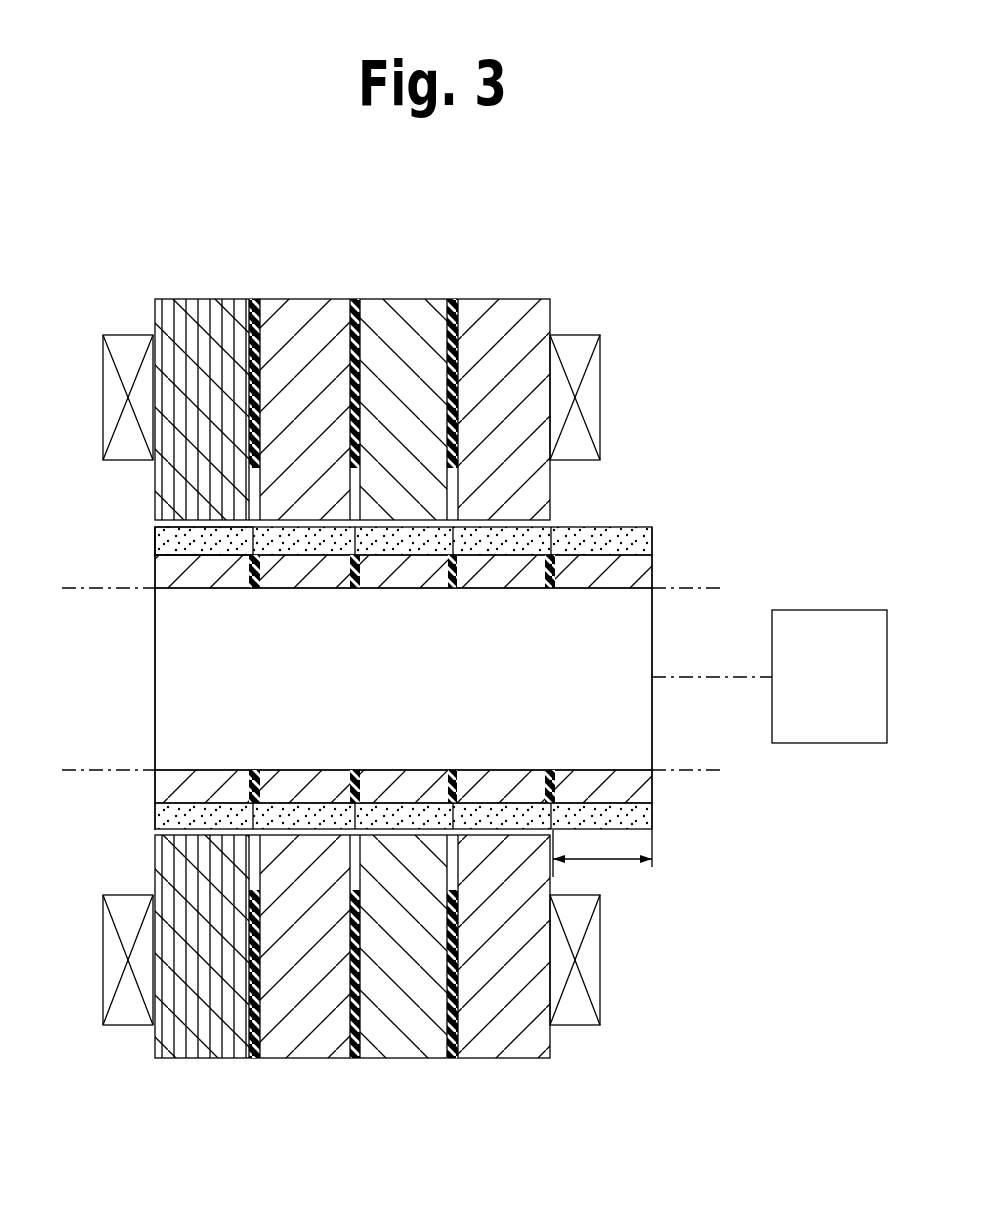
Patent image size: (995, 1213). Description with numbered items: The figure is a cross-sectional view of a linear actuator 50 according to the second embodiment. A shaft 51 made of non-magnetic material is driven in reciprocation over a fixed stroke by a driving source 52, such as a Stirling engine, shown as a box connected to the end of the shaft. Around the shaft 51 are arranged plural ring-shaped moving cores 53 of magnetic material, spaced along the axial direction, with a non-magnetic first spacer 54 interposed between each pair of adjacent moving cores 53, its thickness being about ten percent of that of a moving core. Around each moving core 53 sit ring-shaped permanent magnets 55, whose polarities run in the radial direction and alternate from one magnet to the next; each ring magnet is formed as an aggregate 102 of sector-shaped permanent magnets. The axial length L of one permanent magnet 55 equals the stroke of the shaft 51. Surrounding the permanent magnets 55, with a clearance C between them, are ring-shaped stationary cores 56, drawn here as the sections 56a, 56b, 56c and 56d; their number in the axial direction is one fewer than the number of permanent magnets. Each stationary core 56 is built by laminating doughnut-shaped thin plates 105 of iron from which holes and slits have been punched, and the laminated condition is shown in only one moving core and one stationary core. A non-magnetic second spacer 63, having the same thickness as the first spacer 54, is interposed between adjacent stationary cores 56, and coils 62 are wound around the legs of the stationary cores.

The linear actuator 50 is at (408, 662).
The shaft 51 is at (617, 642).
The driving source 52 is at (861, 666).
The ring-shaped moving core 53 is at (407, 813).
The first spacer 54 is at (557, 785).
The ring-shaped permanent magnet 55 is at (397, 529).
The ring-shaped stationary core 56 is at (350, 360).
The stationary core section 56a is at (170, 303).
The stationary core section 56b is at (310, 308).
The stationary core section 56c is at (412, 308).
The stationary core section 56d is at (502, 307).
The coil 62 is at (592, 418).
The second spacer 63 is at (452, 1058).
The aggregate of sector configured permanent magnets 102 is at (177, 543).
The doughnut-shaped thin plate 105 is at (250, 297).
The clearance C is at (147, 527).
The length of one permanent magnet L is at (602, 852).